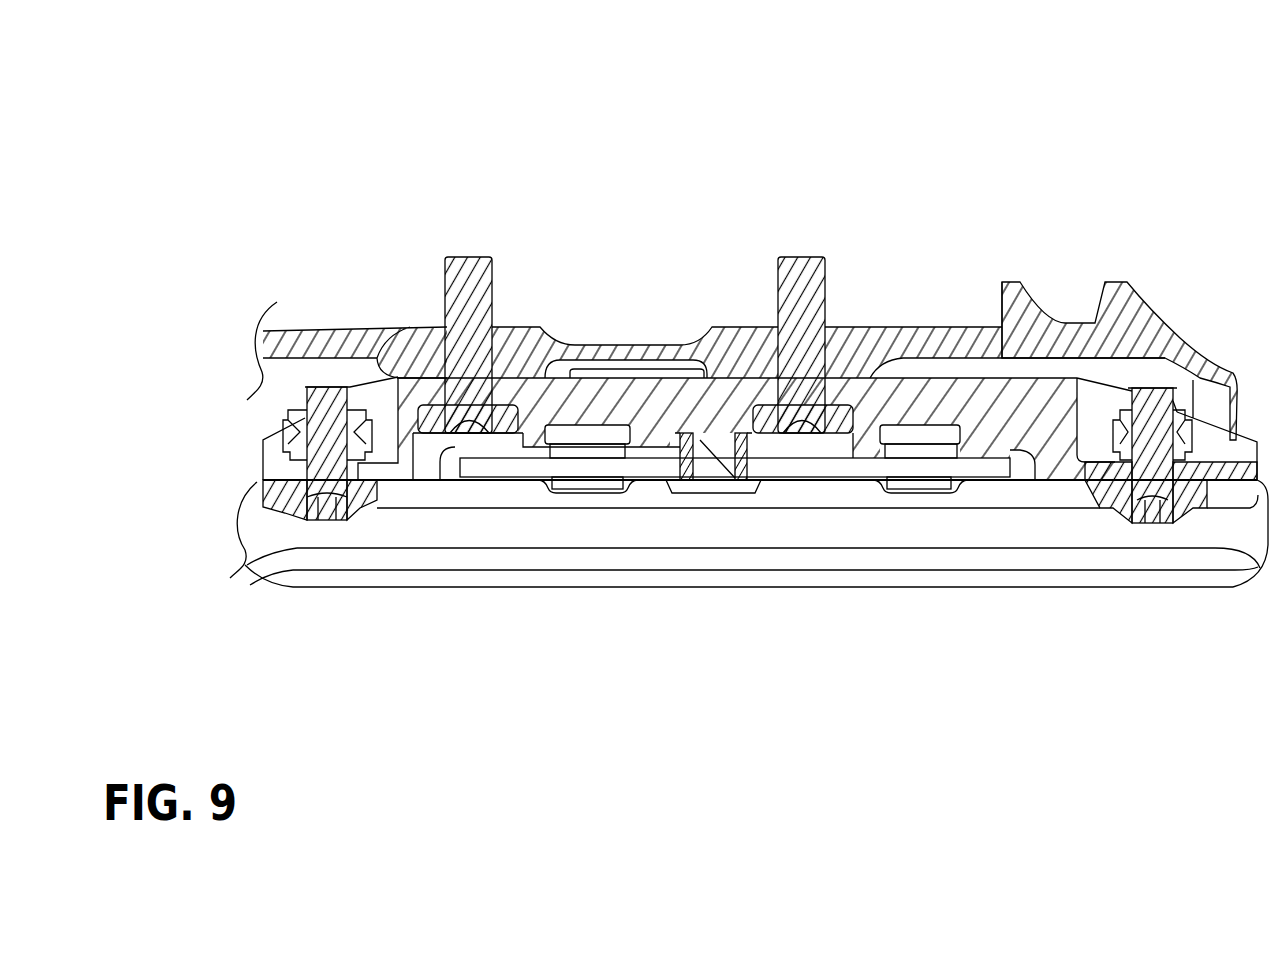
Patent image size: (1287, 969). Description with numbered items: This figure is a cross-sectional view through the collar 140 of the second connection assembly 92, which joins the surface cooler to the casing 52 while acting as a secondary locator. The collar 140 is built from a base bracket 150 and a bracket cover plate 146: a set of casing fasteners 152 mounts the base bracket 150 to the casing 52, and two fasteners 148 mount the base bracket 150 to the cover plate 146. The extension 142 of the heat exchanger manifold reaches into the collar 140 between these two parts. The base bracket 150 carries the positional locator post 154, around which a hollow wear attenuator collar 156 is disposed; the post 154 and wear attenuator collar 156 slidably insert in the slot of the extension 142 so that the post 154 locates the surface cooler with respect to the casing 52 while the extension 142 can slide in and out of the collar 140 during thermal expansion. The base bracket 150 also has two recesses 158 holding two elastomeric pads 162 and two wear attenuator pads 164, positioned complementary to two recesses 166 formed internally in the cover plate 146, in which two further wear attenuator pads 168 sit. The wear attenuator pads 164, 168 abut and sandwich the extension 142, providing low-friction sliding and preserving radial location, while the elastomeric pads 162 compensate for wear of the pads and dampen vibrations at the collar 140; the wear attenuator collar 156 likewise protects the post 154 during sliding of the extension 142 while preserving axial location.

The second connection assembly 92 is at (441, 155).
The casing 52 is at (335, 330).
The collar 140 is at (226, 440).
The extension 142 is at (492, 466).
The bracket cover plate 146 is at (1067, 495).
The fasteners 148 is at (275, 497).
The base bracket 150 is at (1065, 395).
The casing fasteners 152 is at (466, 300).
The positional locator post 154 is at (708, 447).
The wear attenuator collar 156 is at (690, 450).
The recesses 158 is at (635, 412).
The elastomeric pads 162 is at (595, 428).
The wear attenuator pads 164 is at (562, 440).
The recesses 166 is at (567, 497).
The wear attenuator pads 168 is at (603, 483).